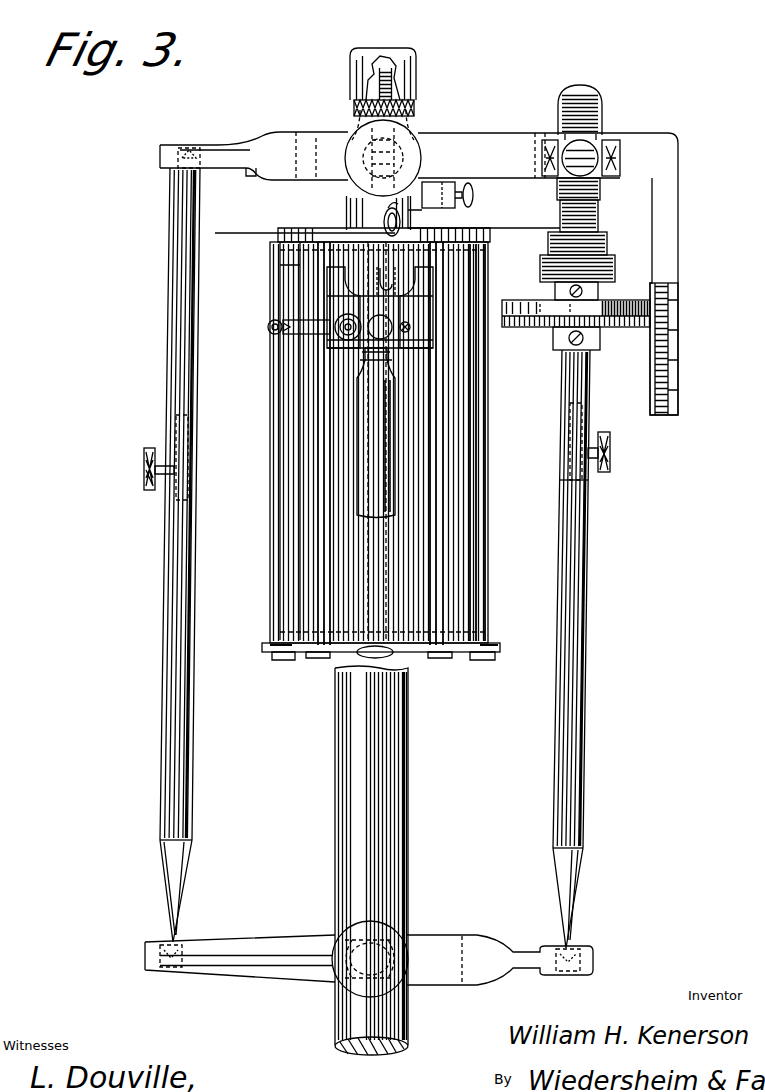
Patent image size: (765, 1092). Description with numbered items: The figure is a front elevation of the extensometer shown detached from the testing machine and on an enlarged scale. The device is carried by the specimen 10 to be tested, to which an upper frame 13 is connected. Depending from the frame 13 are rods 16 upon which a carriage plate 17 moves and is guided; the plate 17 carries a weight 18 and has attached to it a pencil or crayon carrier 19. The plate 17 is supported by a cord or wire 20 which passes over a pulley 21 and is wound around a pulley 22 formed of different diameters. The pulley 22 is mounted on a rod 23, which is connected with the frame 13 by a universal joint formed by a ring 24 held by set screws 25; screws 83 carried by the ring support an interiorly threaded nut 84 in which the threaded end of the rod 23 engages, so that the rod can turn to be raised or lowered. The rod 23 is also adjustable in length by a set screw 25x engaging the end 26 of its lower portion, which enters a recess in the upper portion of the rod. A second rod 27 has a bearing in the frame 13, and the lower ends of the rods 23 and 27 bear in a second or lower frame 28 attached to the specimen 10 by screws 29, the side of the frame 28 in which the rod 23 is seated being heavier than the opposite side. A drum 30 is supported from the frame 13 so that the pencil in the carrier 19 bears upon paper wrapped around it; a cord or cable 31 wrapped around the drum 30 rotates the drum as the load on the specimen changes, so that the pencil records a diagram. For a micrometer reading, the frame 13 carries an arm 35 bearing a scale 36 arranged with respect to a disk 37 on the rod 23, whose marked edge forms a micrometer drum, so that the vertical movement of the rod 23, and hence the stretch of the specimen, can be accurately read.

The specimen 10 is at (348, 810).
The frame 13 is at (390, 153).
The rods 16 is at (316, 642).
The carriage plate 17 is at (380, 307).
The weight 18 is at (364, 495).
The pencil or crayon carrier 19 is at (302, 327).
The cord or wire 20 is at (524, 230).
The pulley 21 is at (405, 219).
The pulley 22 is at (616, 262).
The rod 23 is at (584, 649).
The ring 24 is at (598, 152).
The set screws 25 is at (600, 140).
The set screw 25x is at (619, 455).
The end of the lower portion of the rod 26 is at (572, 440).
The second rod 27 is at (164, 555).
The second or lower frame 28 is at (369, 952).
The screws 29 is at (348, 956).
The drum 30 is at (380, 435).
The cord or cable 31 is at (240, 224).
The arm 35 is at (667, 274).
The scale 36 is at (655, 388).
The disk 37 is at (642, 310).
The screws 83 is at (552, 155).
The interiorly threaded nut 84 is at (600, 186).